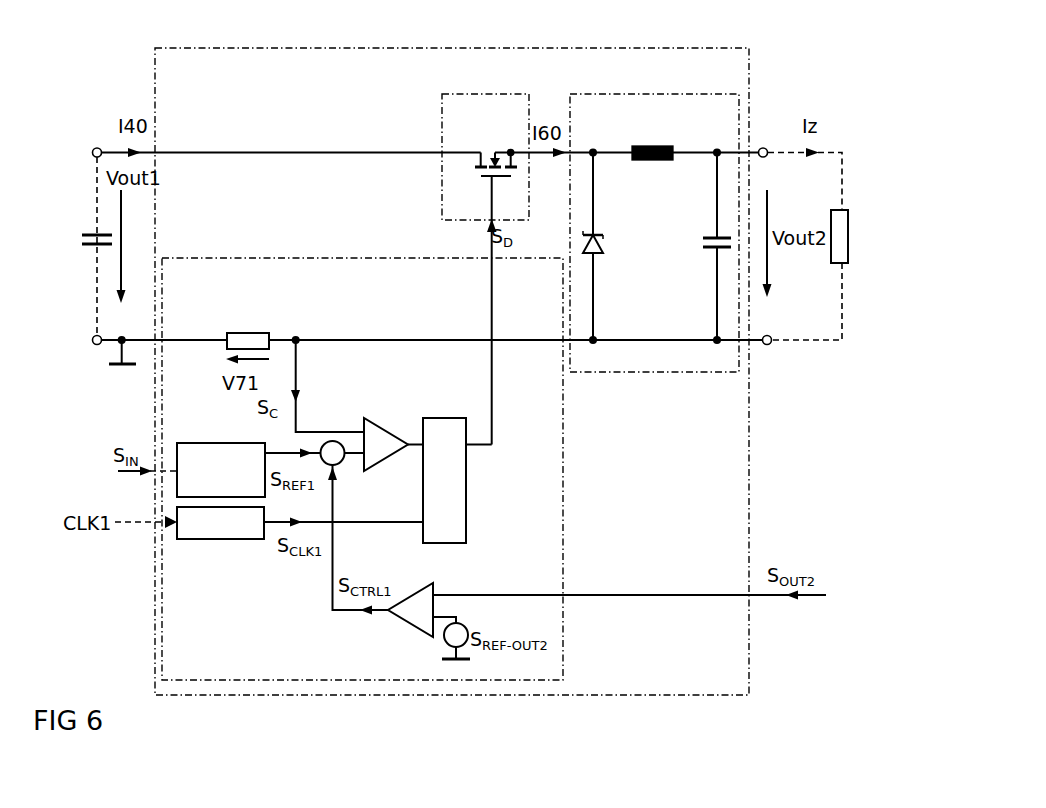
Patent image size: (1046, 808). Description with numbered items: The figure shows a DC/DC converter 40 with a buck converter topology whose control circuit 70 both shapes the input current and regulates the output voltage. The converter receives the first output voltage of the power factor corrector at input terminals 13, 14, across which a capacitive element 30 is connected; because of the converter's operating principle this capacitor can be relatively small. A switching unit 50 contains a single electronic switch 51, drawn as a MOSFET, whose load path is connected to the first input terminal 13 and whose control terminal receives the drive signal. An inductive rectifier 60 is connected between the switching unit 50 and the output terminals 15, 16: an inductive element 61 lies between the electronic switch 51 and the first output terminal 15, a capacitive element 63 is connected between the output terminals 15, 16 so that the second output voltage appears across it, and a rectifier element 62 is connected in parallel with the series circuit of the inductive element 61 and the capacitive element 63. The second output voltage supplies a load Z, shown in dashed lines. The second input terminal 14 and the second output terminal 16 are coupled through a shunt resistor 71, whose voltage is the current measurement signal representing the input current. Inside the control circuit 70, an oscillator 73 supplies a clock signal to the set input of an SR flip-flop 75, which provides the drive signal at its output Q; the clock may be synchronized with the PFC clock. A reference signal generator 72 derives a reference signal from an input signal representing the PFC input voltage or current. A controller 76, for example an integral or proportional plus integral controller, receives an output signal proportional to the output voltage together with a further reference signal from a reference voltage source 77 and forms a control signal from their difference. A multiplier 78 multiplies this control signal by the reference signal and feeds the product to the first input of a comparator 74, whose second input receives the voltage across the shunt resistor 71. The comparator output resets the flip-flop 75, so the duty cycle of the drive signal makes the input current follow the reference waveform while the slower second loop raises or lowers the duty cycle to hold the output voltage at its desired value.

The first input terminal 13 is at (96, 137).
The second input terminal 14 is at (96, 346).
The first output terminal 15 is at (763, 146).
The second output terminal 16 is at (770, 345).
The capacitive element 30 is at (85, 232).
The DC/DC converter 40 is at (564, 47).
The switching unit 50 is at (480, 94).
The electronic switch 51 is at (471, 145).
The inductive rectifier 60 is at (651, 94).
The inductive element 61 is at (647, 146).
The rectifier element 62 is at (604, 243).
The capacitive element 63 is at (705, 237).
The control circuit 70 is at (320, 258).
The shunt resistor 71 is at (251, 332).
The reference signal generator 72 is at (198, 443).
The oscillator 73 is at (218, 545).
The comparator 74 is at (377, 420).
The SR flip-flop 75 is at (443, 418).
The controller 76 is at (418, 590).
The reference voltage source 77 is at (444, 642).
The multiplier 78 is at (346, 460).
The load Z is at (853, 232).